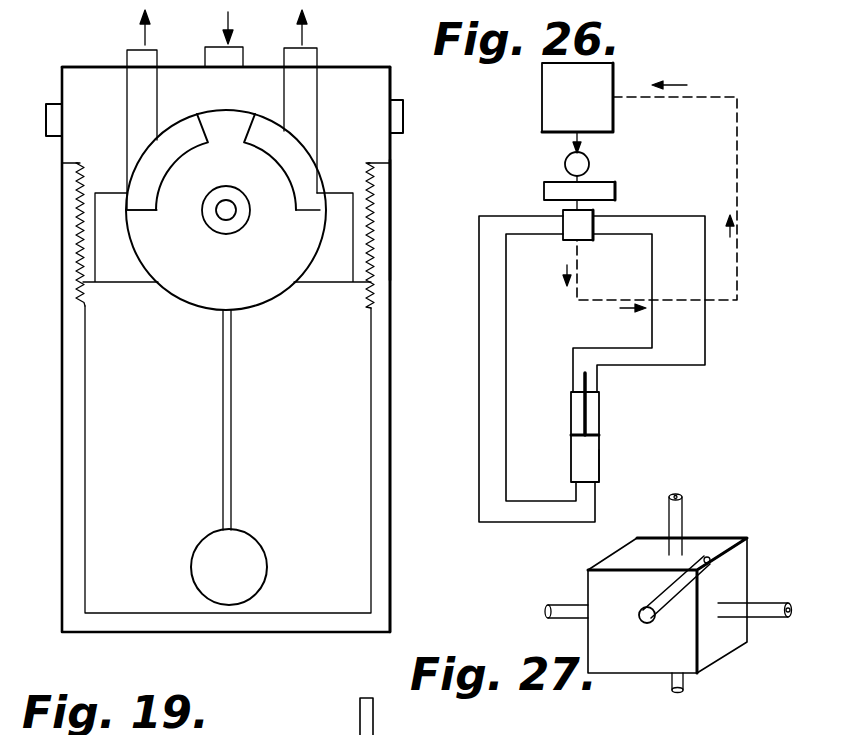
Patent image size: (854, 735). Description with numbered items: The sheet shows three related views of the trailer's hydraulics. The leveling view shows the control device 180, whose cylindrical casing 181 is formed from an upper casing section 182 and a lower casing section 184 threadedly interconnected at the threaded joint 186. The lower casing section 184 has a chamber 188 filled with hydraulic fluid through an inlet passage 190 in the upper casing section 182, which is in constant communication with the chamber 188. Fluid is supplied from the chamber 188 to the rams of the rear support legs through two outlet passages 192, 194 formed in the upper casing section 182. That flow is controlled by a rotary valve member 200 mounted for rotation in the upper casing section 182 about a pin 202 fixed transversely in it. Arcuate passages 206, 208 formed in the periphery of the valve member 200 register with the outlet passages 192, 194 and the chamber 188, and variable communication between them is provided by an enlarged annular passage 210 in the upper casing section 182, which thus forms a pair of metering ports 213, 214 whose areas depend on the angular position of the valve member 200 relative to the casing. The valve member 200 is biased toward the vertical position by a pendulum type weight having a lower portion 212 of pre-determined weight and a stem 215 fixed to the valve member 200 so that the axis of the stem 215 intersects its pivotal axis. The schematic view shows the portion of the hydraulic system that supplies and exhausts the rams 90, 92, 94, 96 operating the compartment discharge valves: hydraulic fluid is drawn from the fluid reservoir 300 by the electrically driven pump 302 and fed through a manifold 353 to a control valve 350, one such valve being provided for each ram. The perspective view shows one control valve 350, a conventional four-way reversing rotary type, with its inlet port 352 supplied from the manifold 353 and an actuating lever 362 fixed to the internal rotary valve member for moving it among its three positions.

In FIG. 19, the control device 180 is at (392, 440).
In FIG. 19, the cylindrical casing 181 is at (371, 310).
In FIG. 19, the upper casing section 182 is at (372, 98).
In FIG. 19, the lower casing section 184 is at (383, 388).
In FIG. 19, the threaded interconnection 186 is at (390, 217).
In FIG. 19, the chamber 188 is at (334, 498).
In FIG. 19, the inlet passage 190 is at (233, 56).
In FIG. 19, the outlet passage 192 is at (145, 103).
In FIG. 19, the outlet passage 194 is at (295, 96).
In FIG. 19, the rotary valve member 200 is at (270, 301).
In FIG. 19, the pin 202 is at (223, 213).
In FIG. 19, the arcuate passage 206 is at (168, 175).
In FIG. 19, the arcuate passage 208 is at (282, 165).
In FIG. 19, the annular passage 210 is at (111, 284).
In FIG. 19, the lower portion of pendulum weight 212 is at (250, 573).
In FIG. 19, the metering port 213 is at (128, 198).
In FIG. 19, the metering port 214 is at (321, 201).
In FIG. 19, the stem 215 is at (232, 423).
In FIG. 26, the fluid reservoir 300 is at (577, 97).
In FIG. 26, the pump 302 is at (589, 158).
In FIG. 26, the manifold 353 is at (603, 183).
In FIG. 26, the control valve 350 is at (588, 216).
In FIG. 27, the control valve 350 is at (665, 655).
In FIG. 26, the ram 90 is at (610, 437).
In FIG. 26, the ram 92 is at (608, 422).
In FIG. 26, the ram 94 is at (615, 408).
In FIG. 26, the ram 96 is at (618, 395).
In FIG. 27, the actuating lever 362 is at (690, 580).
In FIG. 27, the inlet port 352 is at (402, 716).